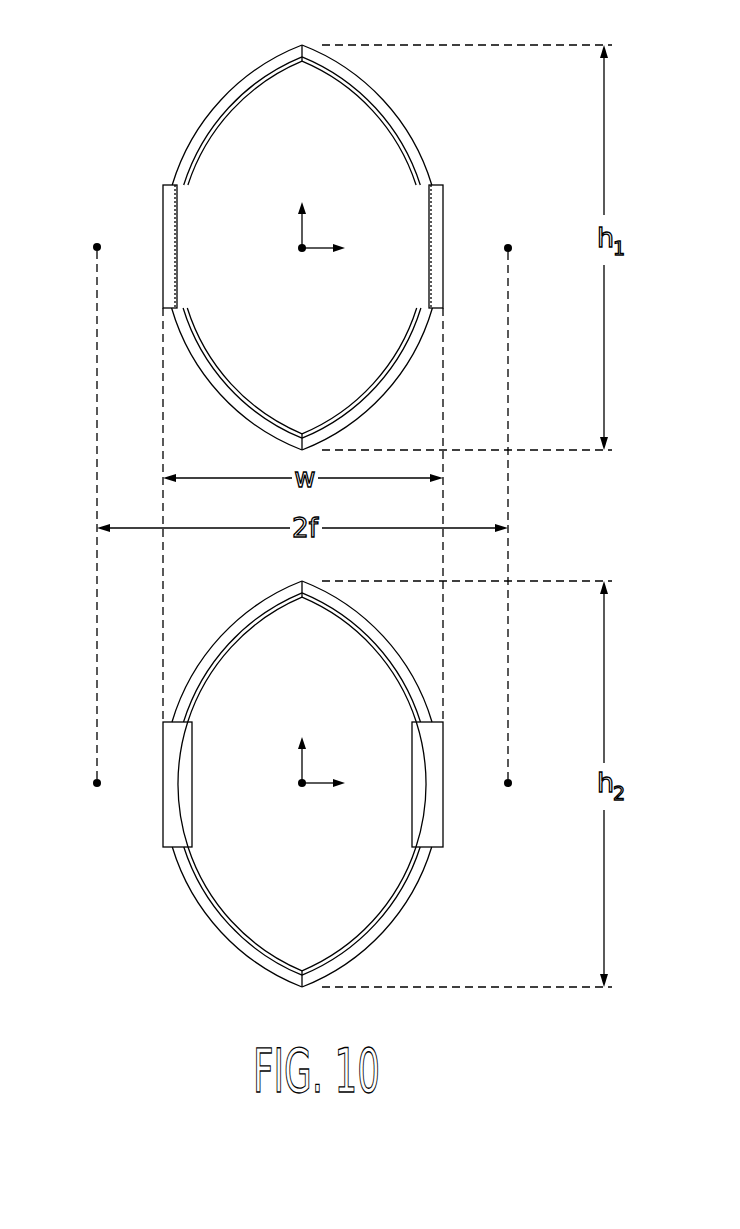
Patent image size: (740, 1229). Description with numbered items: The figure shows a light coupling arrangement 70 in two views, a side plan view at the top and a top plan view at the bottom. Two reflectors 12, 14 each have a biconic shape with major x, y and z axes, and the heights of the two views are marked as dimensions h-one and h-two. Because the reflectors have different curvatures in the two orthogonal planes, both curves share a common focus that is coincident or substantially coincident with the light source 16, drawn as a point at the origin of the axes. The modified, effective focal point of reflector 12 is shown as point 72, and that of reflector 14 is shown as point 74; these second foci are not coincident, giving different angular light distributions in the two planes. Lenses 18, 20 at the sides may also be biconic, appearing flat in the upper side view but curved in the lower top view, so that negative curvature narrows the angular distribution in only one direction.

The reflector 12 is at (244, 78).
The reflector 14 is at (392, 107).
The light source 16 is at (299, 254).
The lens 18 is at (443, 200).
The lens 20 is at (163, 202).
The arrangement 70 is at (188, 89).
The point 72 is at (512, 246).
The point 74 is at (95, 245).